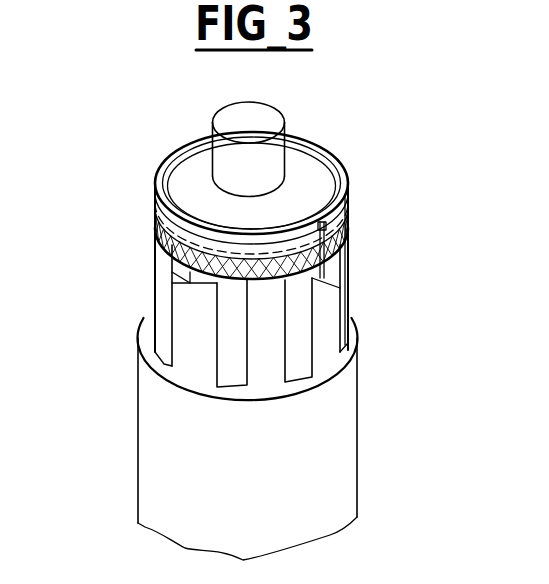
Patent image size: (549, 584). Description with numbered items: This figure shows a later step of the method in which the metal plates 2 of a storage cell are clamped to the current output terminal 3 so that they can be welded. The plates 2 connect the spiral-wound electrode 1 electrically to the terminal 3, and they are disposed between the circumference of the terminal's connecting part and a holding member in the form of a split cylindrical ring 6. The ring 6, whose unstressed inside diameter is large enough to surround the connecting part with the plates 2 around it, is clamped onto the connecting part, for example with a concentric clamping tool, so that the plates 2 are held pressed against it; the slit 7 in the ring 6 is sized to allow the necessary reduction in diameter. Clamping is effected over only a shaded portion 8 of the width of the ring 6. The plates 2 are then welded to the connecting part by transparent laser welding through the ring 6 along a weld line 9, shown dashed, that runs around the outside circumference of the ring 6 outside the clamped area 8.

The spiral-wound electrode 1 is at (337, 459).
The metal plates 2 is at (348, 303).
The current output terminal 3 is at (284, 100).
The split cylindrical ring 6 is at (346, 162).
The slit 7 is at (326, 267).
The clamping portion 8 is at (186, 272).
The weld line 9 is at (171, 241).